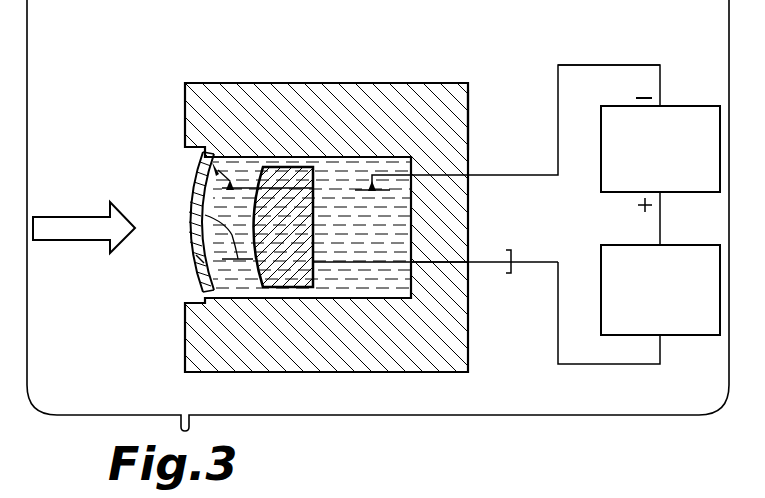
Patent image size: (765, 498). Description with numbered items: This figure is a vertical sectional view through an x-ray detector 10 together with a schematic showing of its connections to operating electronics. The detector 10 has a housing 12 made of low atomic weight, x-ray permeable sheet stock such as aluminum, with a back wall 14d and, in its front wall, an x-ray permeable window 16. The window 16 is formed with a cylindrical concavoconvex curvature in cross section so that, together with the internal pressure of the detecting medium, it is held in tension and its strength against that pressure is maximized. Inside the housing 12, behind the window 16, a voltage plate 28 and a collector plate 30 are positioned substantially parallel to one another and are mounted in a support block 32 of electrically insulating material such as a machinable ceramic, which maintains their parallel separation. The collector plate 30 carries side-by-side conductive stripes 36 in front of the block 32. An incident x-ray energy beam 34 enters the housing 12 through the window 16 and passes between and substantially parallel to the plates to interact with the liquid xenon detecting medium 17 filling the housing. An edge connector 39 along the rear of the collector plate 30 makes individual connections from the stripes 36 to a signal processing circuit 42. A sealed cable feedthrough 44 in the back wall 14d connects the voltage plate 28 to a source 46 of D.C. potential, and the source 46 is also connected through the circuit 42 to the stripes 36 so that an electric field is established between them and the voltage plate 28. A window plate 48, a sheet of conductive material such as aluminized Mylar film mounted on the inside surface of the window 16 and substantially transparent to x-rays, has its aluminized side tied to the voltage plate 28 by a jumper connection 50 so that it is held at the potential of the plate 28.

The detector 10 is at (121, 339).
The housing 12 is at (276, 373).
The back wall 14d is at (470, 118).
The window 16 is at (212, 166).
The liquid xenon detecting medium 17 is at (376, 238).
The voltage plate 28 is at (349, 190).
The collector plate 30 is at (388, 265).
The support block 32 is at (284, 177).
The incident x-ray energy beam 34 is at (76, 216).
The conductive stripes 36 is at (205, 215).
The edge connector 39 is at (510, 274).
The signal processing circuit 42 is at (693, 336).
The sealed cable feedthrough 44 is at (630, 65).
The source of D.C. potential 46 is at (693, 106).
The window plate 48 is at (196, 257).
The jumper connection 50 is at (231, 185).